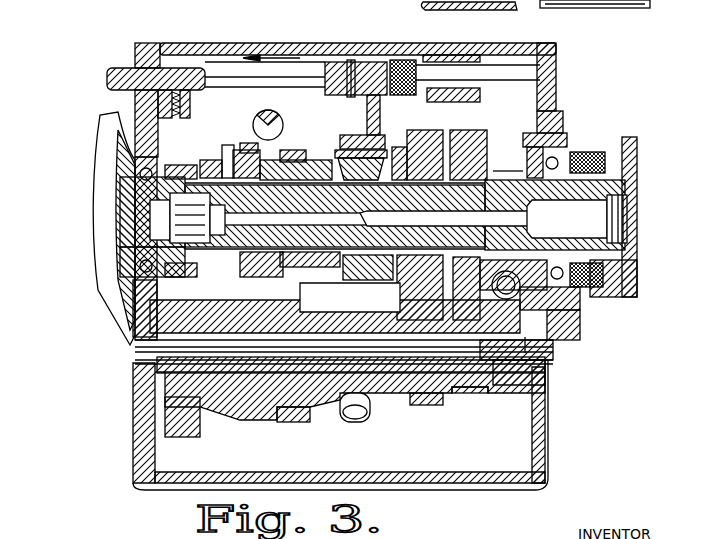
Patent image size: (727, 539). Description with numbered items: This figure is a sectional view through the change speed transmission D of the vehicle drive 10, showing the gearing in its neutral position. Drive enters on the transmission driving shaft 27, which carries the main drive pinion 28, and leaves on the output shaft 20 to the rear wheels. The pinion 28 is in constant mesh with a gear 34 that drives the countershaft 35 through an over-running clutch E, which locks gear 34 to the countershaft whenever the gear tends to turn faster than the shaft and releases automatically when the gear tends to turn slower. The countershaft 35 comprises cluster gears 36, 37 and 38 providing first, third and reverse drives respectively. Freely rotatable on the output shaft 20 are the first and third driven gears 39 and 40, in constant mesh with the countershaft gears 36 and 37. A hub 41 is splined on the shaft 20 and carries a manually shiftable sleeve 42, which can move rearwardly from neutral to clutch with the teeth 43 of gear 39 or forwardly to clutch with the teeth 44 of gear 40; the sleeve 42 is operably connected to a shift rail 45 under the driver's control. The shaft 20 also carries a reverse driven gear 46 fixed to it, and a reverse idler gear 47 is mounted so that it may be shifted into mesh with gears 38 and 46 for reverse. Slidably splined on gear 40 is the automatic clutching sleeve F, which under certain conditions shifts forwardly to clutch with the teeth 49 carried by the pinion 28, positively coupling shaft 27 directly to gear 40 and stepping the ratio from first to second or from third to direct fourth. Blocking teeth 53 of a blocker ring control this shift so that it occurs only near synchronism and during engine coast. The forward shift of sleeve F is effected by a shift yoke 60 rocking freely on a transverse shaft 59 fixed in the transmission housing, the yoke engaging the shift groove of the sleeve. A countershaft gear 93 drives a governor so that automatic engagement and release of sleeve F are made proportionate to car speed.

The machine tool spindle assembly 10 is at (305, 302).
The speed ratio transmission D is at (320, 46).
The shift rail 45 is at (369, 62).
The automatic clutching sleeve F is at (217, 104).
The shift yoke 60 is at (246, 143).
The transverse shaft 59 is at (280, 112).
The third driven gear 40 is at (298, 150).
The teeth of gear 40 44 is at (320, 152).
The manually shiftable sleeve 42 is at (380, 135).
The teeth of gear 39 43 is at (396, 150).
The first driven gear 39 is at (424, 135).
The reverse driven gear 46 is at (470, 128).
The main drive pinion 28 is at (176, 167).
The blocking teeth 53 is at (229, 145).
The teeth carried by pinion 28 49 is at (217, 168).
The transmission driving shaft 27 is at (105, 222).
The hub 41 is at (355, 183).
The output shaft 20 is at (642, 178).
The countershaft gear 93 is at (355, 318).
The reverse idler gear 47 is at (503, 312).
The over-running clutch E is at (223, 400).
The gear 34 is at (180, 437).
The cluster gear (third) 37 is at (282, 425).
The countershaft 35 is at (393, 383).
The cluster gear (first) 36 is at (428, 400).
The cluster gear (reverse) 38 is at (468, 392).